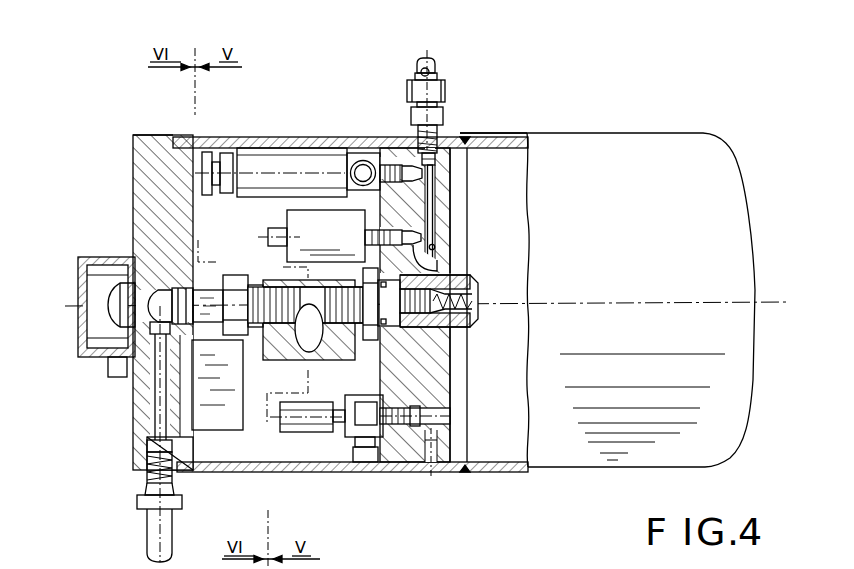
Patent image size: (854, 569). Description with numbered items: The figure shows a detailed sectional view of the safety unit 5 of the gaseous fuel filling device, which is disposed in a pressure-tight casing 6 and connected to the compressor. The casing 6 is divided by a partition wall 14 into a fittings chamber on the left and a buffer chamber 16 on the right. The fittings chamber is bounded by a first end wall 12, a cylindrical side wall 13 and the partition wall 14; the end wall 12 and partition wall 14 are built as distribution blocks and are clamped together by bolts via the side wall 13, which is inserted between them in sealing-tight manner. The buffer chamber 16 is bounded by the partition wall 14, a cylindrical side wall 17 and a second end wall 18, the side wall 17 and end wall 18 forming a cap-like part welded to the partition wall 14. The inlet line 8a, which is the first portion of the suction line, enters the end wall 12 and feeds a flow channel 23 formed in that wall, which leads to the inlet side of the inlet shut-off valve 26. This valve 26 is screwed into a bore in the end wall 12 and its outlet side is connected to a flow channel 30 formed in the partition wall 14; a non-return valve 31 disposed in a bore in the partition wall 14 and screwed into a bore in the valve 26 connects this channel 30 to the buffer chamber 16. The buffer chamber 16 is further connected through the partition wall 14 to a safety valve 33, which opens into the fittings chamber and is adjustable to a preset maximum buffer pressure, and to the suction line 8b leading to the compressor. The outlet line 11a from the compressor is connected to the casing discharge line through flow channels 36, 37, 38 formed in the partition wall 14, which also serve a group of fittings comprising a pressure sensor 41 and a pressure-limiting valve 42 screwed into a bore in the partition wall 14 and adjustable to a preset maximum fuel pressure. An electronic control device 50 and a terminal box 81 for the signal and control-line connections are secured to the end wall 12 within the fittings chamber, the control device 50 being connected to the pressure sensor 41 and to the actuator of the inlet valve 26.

The safety unit 5 is at (168, 125).
The pressure-tight casing 6 is at (510, 123).
The inlet line 8a is at (152, 548).
The suction line 8b is at (416, 65).
The outlet line 11a is at (436, 78).
The first end wall 12 is at (143, 153).
The cylindrical side wall 13 is at (337, 471).
The partition wall 14 is at (411, 471).
The buffer chamber 16 is at (500, 447).
The cylindrical side wall 17 is at (527, 471).
The second end wall 18 is at (737, 160).
The flow channel 23 is at (155, 405).
The inlet shut-off valve 26 is at (240, 275).
The flow channel 30 is at (447, 417).
The non-return valve 31 is at (452, 360).
The safety valve 33 is at (320, 425).
The flow channel 36 is at (443, 262).
The flow channel 37 is at (430, 186).
The flow channel 38 is at (431, 202).
The pressure sensor 41 is at (298, 222).
The pressure-limiting valve 42 is at (308, 150).
The electronic control device 50 is at (222, 420).
The terminal box 81 is at (103, 255).